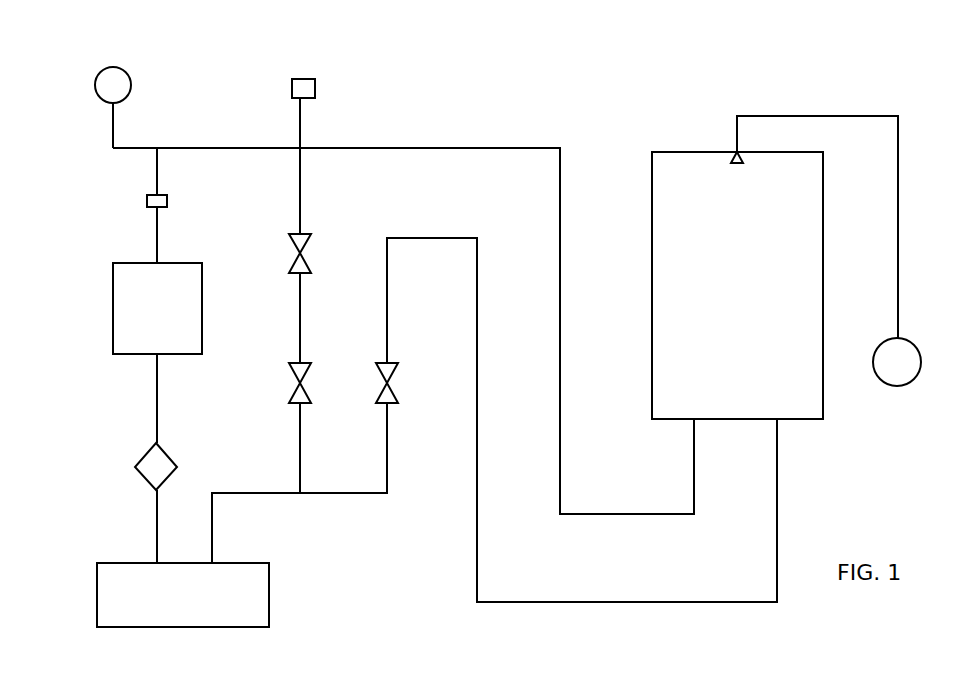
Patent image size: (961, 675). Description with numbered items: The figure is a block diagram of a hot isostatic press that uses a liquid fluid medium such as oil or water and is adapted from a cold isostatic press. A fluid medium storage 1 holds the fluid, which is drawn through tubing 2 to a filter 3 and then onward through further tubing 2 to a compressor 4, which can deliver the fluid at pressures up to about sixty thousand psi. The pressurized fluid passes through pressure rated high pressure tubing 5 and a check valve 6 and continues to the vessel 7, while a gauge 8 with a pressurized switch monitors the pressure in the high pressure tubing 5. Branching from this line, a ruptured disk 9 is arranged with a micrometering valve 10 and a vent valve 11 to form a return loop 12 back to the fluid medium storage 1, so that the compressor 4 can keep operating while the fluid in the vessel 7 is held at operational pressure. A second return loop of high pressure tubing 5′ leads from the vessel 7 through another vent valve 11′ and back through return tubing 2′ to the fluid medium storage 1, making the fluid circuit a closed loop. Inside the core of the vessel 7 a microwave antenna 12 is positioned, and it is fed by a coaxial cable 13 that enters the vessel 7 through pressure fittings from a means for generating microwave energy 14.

The fluid medium storage 1 is at (97, 583).
The tubing 2 is at (157, 515).
The tubing 2′ is at (368, 494).
The filter 3 is at (146, 452).
The compressor 4 is at (113, 305).
The high pressure tubing 5 is at (157, 228).
The high pressure tubing 5′ is at (645, 602).
The check valve 6 is at (153, 195).
The vessel 7 is at (685, 152).
The gauge 8 is at (105, 66).
The ruptured disk 9 is at (303, 79).
The micrometering valve 10 is at (305, 234).
The vent valve 11 is at (298, 363).
The vent valve 11′ is at (388, 362).
The return loop 12 is at (300, 292).
The coaxial cable 13 is at (899, 195).
The means for generating microwave energy 14 is at (913, 333).